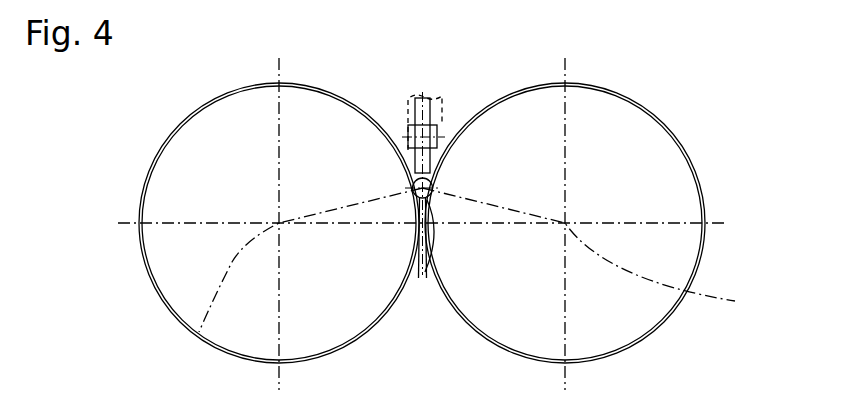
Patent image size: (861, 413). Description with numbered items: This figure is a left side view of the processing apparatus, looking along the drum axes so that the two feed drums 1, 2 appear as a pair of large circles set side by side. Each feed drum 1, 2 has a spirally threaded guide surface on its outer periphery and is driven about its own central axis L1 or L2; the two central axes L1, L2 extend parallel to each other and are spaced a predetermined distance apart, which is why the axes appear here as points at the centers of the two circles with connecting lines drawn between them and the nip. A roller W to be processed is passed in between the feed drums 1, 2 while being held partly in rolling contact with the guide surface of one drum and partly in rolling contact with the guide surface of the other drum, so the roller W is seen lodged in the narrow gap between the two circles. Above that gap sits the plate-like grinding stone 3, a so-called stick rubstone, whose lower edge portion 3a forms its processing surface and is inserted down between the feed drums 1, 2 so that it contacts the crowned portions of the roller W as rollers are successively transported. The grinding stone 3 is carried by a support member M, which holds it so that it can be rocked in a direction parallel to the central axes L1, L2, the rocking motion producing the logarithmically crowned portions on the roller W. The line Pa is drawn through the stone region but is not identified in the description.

The feed drum 1 is at (653, 142).
The feed drum 2 is at (183, 157).
The grinding stone 3 is at (419, 118).
The lower edge portion 3a is at (433, 190).
The support member M is at (405, 110).
The discharge axis of nozzle Pa is at (435, 128).
The roller W is at (436, 245).
The central axis L1 is at (599, 256).
The central axis L2 is at (199, 332).